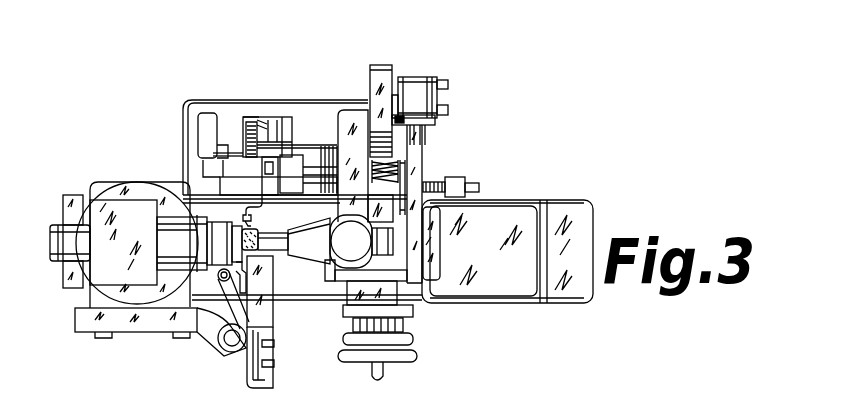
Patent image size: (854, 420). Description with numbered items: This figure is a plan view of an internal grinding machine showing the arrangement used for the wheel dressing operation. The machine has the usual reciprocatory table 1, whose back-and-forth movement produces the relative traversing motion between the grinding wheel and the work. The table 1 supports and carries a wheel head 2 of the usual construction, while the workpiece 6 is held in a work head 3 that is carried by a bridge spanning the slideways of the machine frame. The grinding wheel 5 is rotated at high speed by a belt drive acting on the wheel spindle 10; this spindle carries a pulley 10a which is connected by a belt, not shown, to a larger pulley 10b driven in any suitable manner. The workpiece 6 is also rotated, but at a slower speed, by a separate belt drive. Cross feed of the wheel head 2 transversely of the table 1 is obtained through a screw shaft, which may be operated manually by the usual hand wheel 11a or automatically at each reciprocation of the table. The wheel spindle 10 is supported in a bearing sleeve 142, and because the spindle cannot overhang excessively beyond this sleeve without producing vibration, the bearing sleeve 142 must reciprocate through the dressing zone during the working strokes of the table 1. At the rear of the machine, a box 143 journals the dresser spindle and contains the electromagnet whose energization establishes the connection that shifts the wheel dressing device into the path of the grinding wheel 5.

The reciprocatory table 1 is at (568, 207).
The wheel head 2 is at (340, 255).
The work head 3 is at (102, 290).
The grinding wheel 5 is at (243, 238).
The workpiece 6 is at (245, 232).
The wheel spindle 10 is at (283, 250).
The pulley 10a is at (430, 273).
The larger pulley 10b is at (384, 75).
The hand wheel 11a is at (363, 362).
The bearing sleeve 142 is at (312, 250).
The box 143 is at (208, 117).